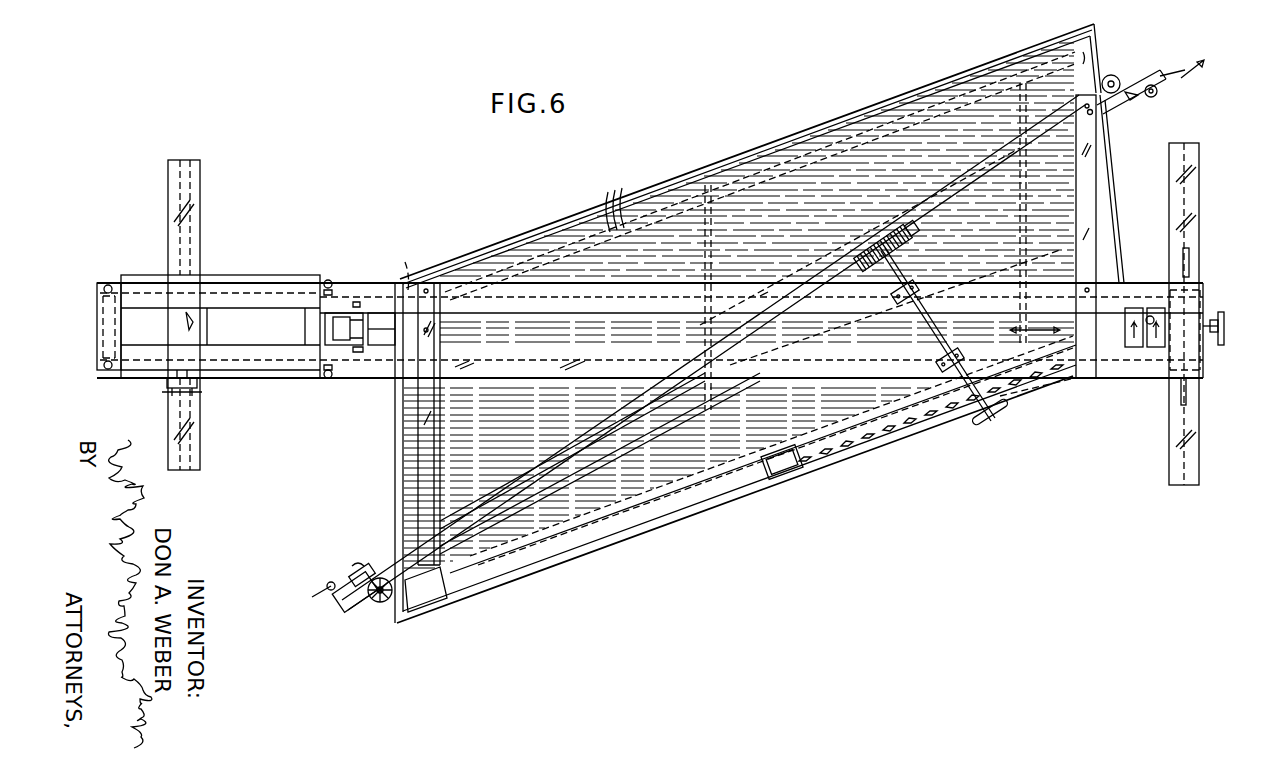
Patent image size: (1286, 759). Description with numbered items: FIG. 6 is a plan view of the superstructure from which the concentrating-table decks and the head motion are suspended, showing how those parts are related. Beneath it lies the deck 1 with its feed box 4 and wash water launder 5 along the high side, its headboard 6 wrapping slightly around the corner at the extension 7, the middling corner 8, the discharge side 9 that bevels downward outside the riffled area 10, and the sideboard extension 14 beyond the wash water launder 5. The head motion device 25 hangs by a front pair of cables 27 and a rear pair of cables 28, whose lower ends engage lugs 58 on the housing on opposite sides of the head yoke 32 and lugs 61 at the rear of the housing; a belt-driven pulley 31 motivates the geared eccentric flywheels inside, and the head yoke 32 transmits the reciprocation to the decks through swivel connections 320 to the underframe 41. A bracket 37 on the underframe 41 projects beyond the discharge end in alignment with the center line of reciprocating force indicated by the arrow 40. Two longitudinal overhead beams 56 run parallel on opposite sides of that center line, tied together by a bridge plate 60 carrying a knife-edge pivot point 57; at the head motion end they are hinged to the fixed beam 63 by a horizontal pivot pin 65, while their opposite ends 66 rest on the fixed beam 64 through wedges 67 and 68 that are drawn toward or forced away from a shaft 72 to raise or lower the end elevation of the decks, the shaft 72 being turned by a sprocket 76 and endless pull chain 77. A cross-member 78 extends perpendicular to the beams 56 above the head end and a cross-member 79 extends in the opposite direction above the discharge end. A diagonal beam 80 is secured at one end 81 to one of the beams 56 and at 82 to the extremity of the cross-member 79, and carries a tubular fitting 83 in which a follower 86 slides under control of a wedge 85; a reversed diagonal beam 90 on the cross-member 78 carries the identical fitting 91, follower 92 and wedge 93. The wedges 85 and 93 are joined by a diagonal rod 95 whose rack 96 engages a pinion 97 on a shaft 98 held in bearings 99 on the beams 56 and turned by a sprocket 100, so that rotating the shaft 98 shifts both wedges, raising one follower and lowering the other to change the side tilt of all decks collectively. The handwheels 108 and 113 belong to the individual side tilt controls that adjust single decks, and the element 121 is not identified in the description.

The deck 1 is at (838, 104).
The feed box 4 is at (530, 573).
The wash water launder 5 is at (847, 456).
The headboard 6 is at (396, 494).
The headboard extension 7 is at (403, 271).
The middling corner 8 is at (1097, 33).
The discharge side 9 is at (715, 166).
The riffled area 10 is at (1175, 348).
The sideboard extension 14 is at (1118, 143).
The head motion device 25 is at (270, 275).
The cables 27 is at (330, 279).
The cables 28 is at (108, 284).
The pulley 31 is at (206, 393).
The head yoke 32 is at (340, 312).
The bracket 37 is at (1055, 392).
The arrow 40 is at (1035, 328).
The underframe 41 is at (1030, 256).
The longitudinal overhead beams 56 is at (494, 290).
The knife-edge pivot point 57 is at (1150, 308).
The lugs 58 is at (338, 262).
The bridge plate 60 is at (1152, 348).
The lugs 61 is at (97, 290).
The fixed beam 63 is at (168, 218).
The fixed beam 64 is at (1200, 210).
The horizontal pivot pin 65 is at (190, 318).
The beam ends 66 is at (1205, 295).
The wedge 67 is at (1192, 395).
The wedge 68 is at (1192, 262).
The shaft 72 is at (1215, 335).
The sprocket 76 is at (1210, 325).
The endless pull chain 77 is at (1226, 330).
The cross-member 78 is at (420, 448).
The cross-member 79 is at (1093, 200).
The diagonal beam 80 is at (960, 195).
The beam end 81 is at (783, 287).
The connection point 82 is at (1092, 116).
The tubular fitting 83 is at (1153, 100).
The wedge 85 is at (1133, 110).
The follower 86 is at (1158, 92).
The diagonal beam 90 is at (573, 473).
The fitting 91 is at (330, 582).
The follower 92 is at (345, 600).
The wedge 93 is at (357, 568).
The rod 95 is at (550, 450).
The rack 96 is at (912, 267).
The pinion 97 is at (880, 252).
The shaft 98 is at (945, 400).
The bearings 99 is at (892, 300).
The sprocket 100 is at (990, 426).
The handwheel 108 is at (365, 560).
The handwheel 113 is at (382, 604).
The hook 121 is at (1087, 62).
The swivel connections 320 is at (385, 312).